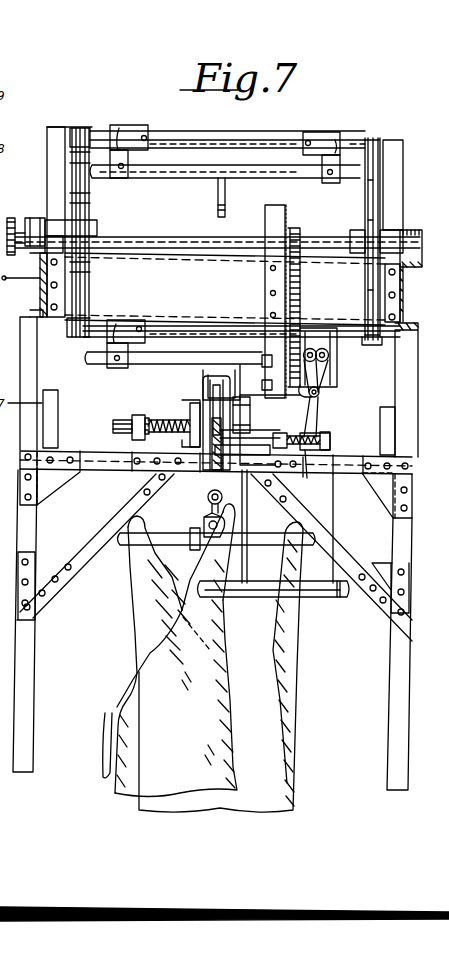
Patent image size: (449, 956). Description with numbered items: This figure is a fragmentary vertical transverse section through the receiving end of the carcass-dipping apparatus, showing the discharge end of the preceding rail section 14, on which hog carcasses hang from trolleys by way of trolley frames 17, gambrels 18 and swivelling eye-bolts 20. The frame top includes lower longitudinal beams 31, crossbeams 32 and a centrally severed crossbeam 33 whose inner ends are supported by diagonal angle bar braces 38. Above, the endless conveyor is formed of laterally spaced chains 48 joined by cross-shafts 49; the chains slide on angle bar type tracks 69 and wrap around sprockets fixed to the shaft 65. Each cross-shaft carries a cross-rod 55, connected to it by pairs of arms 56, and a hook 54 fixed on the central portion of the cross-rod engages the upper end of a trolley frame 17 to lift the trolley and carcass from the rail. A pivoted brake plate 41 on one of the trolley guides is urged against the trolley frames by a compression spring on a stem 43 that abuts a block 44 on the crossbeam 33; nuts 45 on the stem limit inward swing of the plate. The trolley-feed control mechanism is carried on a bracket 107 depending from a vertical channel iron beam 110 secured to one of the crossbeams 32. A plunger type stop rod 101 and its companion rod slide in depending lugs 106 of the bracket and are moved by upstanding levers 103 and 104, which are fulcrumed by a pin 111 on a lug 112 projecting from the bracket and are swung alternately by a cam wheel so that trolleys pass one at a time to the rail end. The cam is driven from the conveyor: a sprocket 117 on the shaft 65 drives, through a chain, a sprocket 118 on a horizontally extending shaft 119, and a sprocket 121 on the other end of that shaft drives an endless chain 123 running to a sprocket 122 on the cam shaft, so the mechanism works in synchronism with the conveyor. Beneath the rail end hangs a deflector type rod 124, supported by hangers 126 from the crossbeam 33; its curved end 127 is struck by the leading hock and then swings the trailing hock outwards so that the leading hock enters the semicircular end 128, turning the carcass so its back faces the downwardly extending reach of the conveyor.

The angle bar type tracks 69 is at (64, 134).
The chains 48 is at (90, 200).
The lower longitudinal beams 31 is at (58, 410).
The sprocket 118 is at (13, 220).
The shaft 119 is at (150, 240).
The shaft 65 is at (335, 240).
The cross-shafts 49 is at (185, 132).
The cross-rods 55 is at (162, 178).
The arms 56 is at (128, 130).
The hooks 54 is at (240, 178).
The endless chain 123 is at (302, 292).
The crossbeams 32 is at (225, 289).
The channel iron beam 110 is at (288, 217).
The sprocket 121 is at (288, 252).
The bracket 107 is at (283, 338).
The sprocket 122 is at (283, 365).
The pin 111 is at (320, 392).
The lug 112 is at (318, 399).
The lever 103 is at (318, 410).
The lever 104 is at (320, 424).
The depending lugs 106 is at (330, 440).
The sprocket 117 is at (307, 470).
The preceding rail section 14 is at (240, 456).
The trolley frames 17 is at (203, 385).
The stop rod 101 is at (252, 432).
The brake plate 41 is at (193, 420).
The block 44 is at (138, 416).
The nuts 45 is at (113, 425).
The stem 43 is at (133, 438).
The crossbeam 33 is at (102, 470).
The diagonal angle bar braces 38 is at (83, 552).
The semicircular end 128 is at (351, 595).
The eye-bolts 20 is at (208, 497).
The gambrels 18 is at (204, 521).
The hangers 126 is at (246, 523).
The deflector type rod 124 is at (251, 595).
The curved end 127 is at (302, 596).